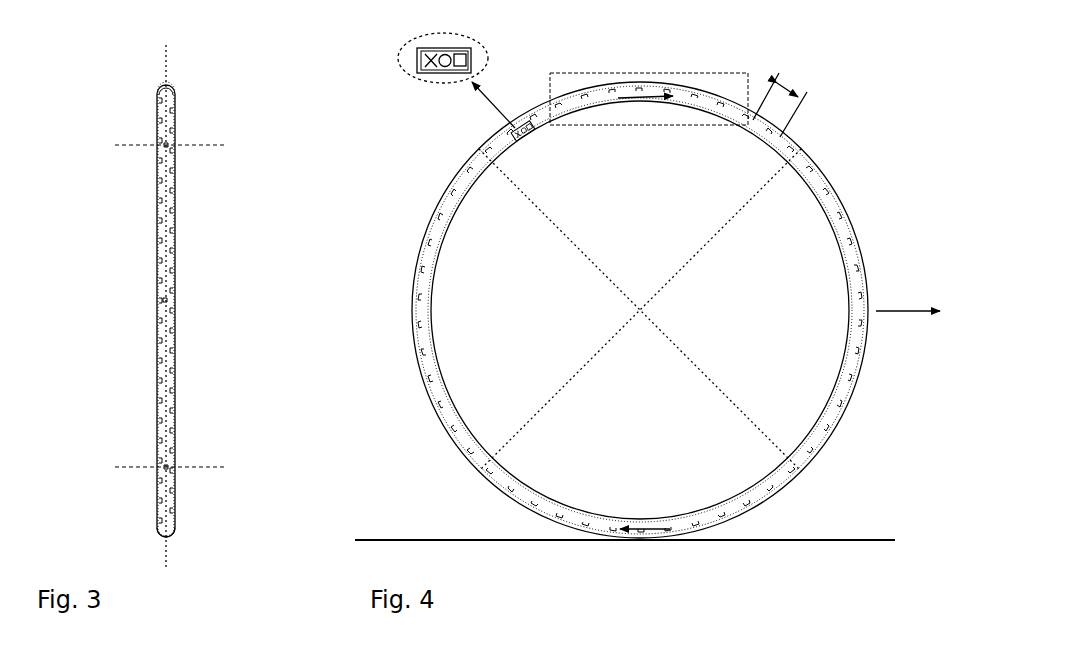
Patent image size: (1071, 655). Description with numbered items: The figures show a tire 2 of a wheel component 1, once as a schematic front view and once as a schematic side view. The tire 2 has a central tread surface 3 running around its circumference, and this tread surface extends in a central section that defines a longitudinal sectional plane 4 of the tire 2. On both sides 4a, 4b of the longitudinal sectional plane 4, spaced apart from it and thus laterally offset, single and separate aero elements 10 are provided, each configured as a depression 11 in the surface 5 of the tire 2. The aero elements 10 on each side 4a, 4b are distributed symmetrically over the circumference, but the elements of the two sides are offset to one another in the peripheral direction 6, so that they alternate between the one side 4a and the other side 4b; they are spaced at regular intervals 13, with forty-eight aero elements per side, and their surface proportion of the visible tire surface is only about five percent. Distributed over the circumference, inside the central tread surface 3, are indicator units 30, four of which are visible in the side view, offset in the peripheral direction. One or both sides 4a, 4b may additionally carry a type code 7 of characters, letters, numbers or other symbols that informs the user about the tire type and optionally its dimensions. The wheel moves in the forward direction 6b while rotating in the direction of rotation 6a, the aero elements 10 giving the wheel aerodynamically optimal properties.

In FIG. 3, the wheel component 1 is at (134, 78).
In FIG. 3, the tire 2 is at (172, 88).
In FIG. 4, the tire 2 is at (440, 200).
In FIG. 3, the central tread surface 3 is at (170, 80).
In FIG. 4, the central tread surface 3 is at (415, 268).
In FIG. 3, the longitudinal sectional plane 4 is at (166, 546).
In FIG. 3, the side 4a is at (158, 365).
In FIG. 4, the side 4a is at (418, 353).
In FIG. 3, the side 4b is at (172, 382).
In FIG. 4, the surface of the tire 5 is at (432, 408).
In FIG. 4, the peripheral direction 6 is at (647, 530).
In FIG. 4, the direction of rotation 6a is at (633, 98).
In FIG. 4, the forward direction 6b is at (905, 311).
In FIG. 4, the type code 7 is at (517, 46).
In FIG. 3, the aero element 10 is at (170, 222).
In FIG. 4, the aero element 10 is at (610, 90).
In FIG. 4, the depression 11 is at (855, 225).
In FIG. 4, the regular interval 13 is at (790, 84).
In FIG. 3, the indicator unit 30 is at (167, 145).
In FIG. 4, the indicator unit 30 is at (490, 136).